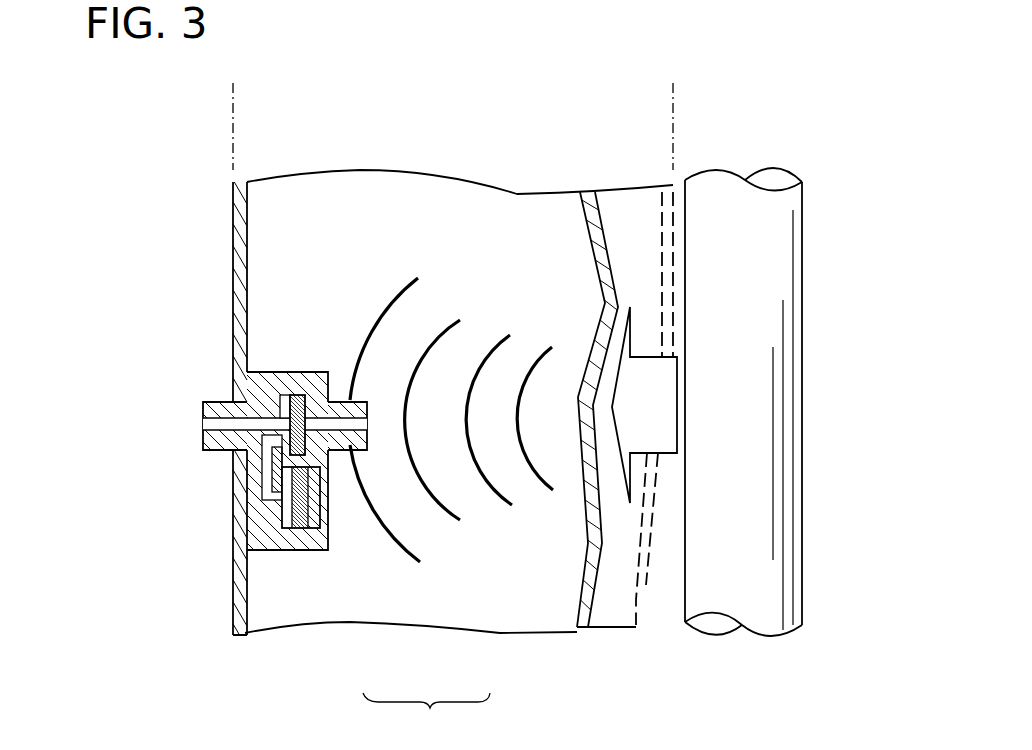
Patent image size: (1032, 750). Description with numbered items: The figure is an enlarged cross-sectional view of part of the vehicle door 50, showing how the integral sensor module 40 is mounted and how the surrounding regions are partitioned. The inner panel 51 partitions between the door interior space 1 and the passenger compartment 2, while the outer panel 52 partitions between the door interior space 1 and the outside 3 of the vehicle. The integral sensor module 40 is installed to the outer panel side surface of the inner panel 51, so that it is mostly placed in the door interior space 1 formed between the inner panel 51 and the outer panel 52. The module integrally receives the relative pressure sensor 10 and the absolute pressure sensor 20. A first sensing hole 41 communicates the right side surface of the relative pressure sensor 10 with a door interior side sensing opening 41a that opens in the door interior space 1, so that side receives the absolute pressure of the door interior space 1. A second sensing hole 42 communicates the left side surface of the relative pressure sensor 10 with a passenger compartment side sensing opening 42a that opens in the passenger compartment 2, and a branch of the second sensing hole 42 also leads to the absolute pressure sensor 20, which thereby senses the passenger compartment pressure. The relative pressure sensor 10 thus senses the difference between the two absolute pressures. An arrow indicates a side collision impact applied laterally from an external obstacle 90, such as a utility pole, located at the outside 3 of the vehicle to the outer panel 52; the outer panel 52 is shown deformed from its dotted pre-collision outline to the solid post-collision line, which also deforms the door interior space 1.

The door interior space 1 is at (449, 138).
The passenger compartment 2 is at (152, 143).
The outside of the vehicle 3 is at (747, 138).
The relative pressure sensor 10 is at (285, 462).
The absolute pressure sensor 20 is at (300, 507).
The integral sensor module 40 is at (281, 364).
The first sensing hole 41 is at (338, 447).
The door interior side sensing opening 41a is at (368, 432).
The second sensing hole 42 is at (225, 427).
The passenger compartment side sensing opening 42a is at (203, 428).
The vehicle door 50 is at (426, 715).
The inner panel 51 is at (245, 597).
The outer panel 52 is at (630, 603).
The external obstacle 90 is at (803, 352).